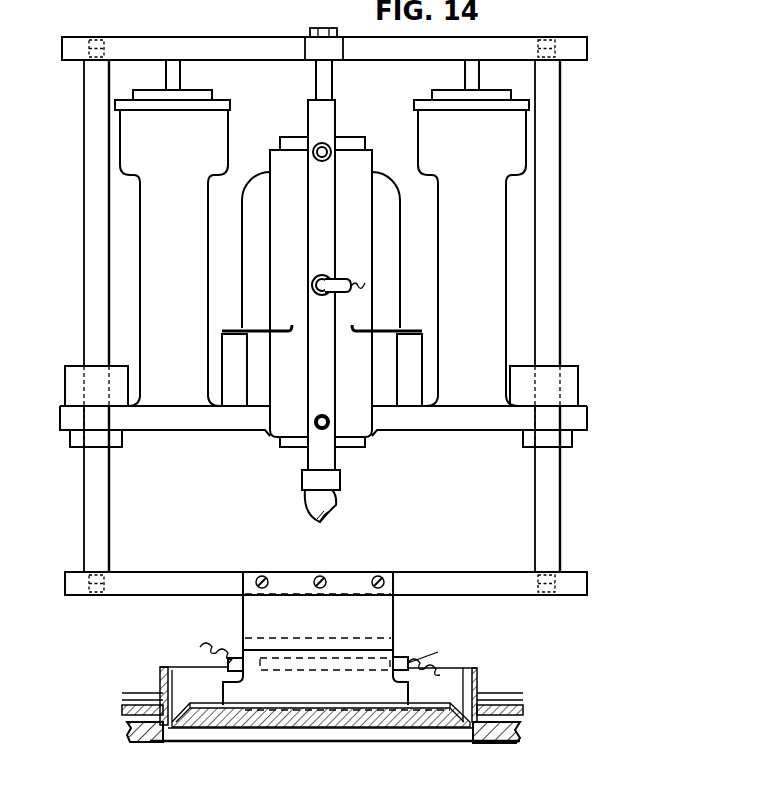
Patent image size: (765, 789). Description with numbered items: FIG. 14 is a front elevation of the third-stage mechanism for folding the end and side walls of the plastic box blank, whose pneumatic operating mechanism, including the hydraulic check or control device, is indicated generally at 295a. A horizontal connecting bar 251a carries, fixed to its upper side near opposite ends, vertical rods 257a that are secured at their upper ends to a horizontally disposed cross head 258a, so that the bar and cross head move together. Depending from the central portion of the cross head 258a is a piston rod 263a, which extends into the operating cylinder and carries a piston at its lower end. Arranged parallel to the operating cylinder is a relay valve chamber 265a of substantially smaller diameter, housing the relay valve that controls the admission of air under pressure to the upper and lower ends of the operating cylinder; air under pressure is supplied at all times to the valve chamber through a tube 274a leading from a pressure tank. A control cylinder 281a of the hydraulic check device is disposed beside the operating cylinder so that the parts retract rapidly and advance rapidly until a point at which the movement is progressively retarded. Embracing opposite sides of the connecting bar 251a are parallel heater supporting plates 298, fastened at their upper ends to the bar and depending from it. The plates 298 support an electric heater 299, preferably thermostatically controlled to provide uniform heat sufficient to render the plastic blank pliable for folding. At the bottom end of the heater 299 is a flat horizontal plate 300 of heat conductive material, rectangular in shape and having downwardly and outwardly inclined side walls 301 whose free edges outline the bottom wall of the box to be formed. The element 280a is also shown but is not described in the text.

The cross head 258a is at (515, 47).
The piston rod 263a is at (325, 90).
The relay valve chamber 265a is at (332, 259).
The tube 274a is at (365, 283).
The pneumatic operating mechanism 295a is at (514, 203).
The vertical rod 257a is at (550, 247).
The control cylinder 281a is at (95, 234).
The nozzle 280a is at (330, 503).
The horizontal connecting bar 251a is at (452, 575).
The heater supporting plate 298 is at (380, 628).
The electric heater 299 is at (397, 697).
The plate 300 is at (220, 707).
The side wall 301 is at (187, 727).